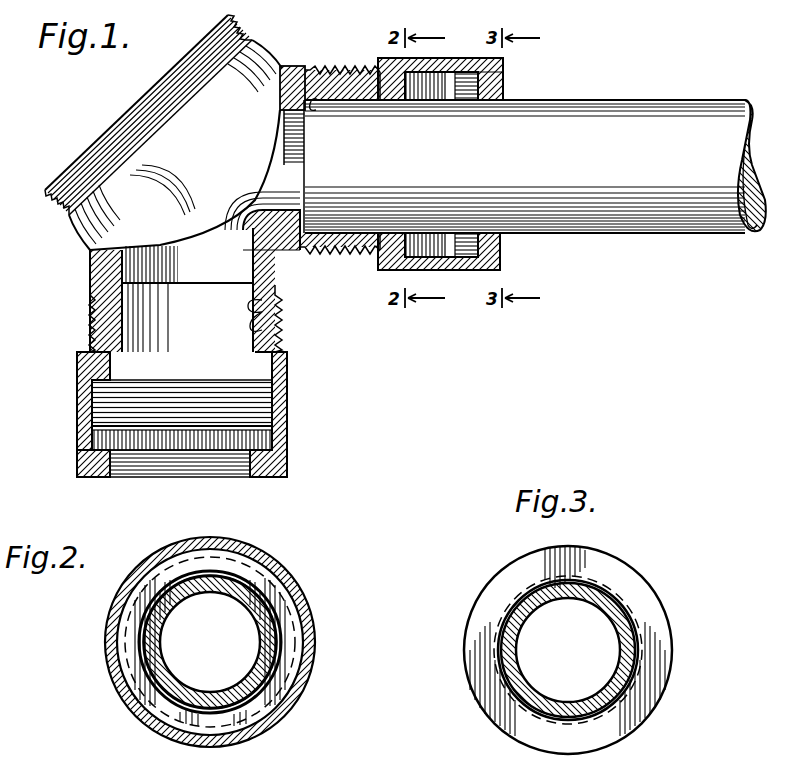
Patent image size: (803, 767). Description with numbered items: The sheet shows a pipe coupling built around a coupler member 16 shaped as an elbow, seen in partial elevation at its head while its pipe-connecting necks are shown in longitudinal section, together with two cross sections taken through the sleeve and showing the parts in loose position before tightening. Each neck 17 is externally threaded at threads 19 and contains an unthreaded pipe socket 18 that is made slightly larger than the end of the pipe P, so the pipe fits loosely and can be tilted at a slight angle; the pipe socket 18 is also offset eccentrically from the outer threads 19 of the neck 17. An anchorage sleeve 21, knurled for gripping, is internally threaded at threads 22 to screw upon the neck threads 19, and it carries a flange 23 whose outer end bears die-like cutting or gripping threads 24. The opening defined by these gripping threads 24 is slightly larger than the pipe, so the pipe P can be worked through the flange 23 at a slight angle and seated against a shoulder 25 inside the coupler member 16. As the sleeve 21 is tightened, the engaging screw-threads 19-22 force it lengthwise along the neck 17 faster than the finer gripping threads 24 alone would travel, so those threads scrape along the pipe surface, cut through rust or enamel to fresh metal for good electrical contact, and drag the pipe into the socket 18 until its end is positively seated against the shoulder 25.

In FIG. 1, the coupler member 16 is at (165, 165).
In FIG. 1, the neck 17 is at (340, 72).
In FIG. 2, the neck 17 is at (280, 606).
In FIG. 1, the pipe socket 18 is at (313, 72).
In FIG. 2, the pipe socket 18 is at (290, 668).
In FIG. 1, the external threads 19 is at (356, 72).
In FIG. 1, the anchorage sleeve 21 is at (386, 60).
In FIG. 2, the anchorage sleeve 21 is at (278, 574).
In FIG. 1, the internal sleeve threads 22 is at (422, 78).
In FIG. 1, the flange 23 is at (503, 70).
In FIG. 3, the flange 23 is at (626, 584).
In FIG. 1, the gripping threads 24 is at (503, 88).
In FIG. 3, the gripping threads 24 is at (648, 636).
In FIG. 1, the shoulder 25 is at (258, 300).
In FIG. 1, the pipe P is at (628, 115).
In FIG. 2, the pipe P is at (268, 640).
In FIG. 3, the pipe P is at (630, 660).
In FIG. 2, the engaging screw-threads 19-22 is at (296, 682).